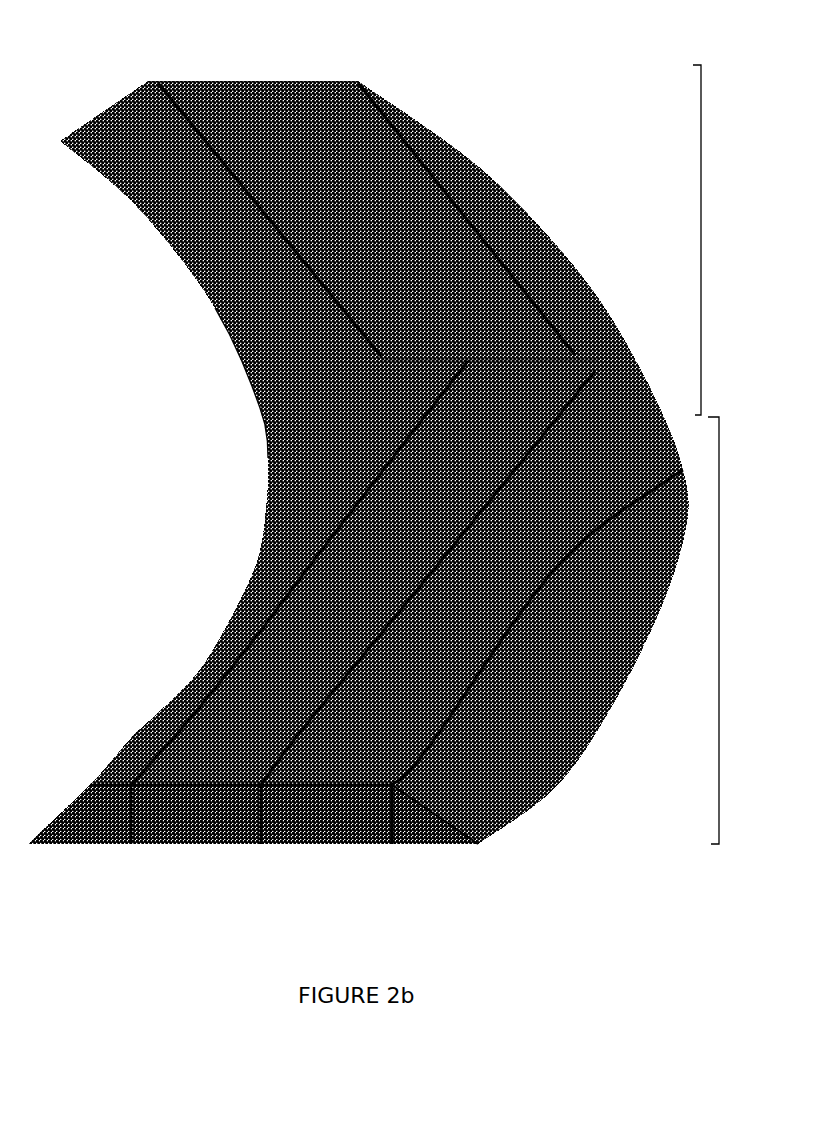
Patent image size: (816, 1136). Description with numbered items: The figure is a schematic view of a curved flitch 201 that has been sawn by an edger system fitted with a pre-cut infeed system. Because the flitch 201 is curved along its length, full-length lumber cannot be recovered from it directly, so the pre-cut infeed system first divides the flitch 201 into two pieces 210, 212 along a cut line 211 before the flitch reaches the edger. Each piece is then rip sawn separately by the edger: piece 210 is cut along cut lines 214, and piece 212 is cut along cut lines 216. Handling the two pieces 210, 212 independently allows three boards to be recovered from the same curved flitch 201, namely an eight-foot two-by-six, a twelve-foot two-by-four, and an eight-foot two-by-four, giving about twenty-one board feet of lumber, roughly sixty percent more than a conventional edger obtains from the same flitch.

The curved flitch 201 is at (147, 338).
The piece 210 is at (713, 580).
The cut line 211 is at (280, 393).
The piece 212 is at (697, 210).
The cut lines 214 is at (293, 723).
The cut lines 216 is at (172, 98).